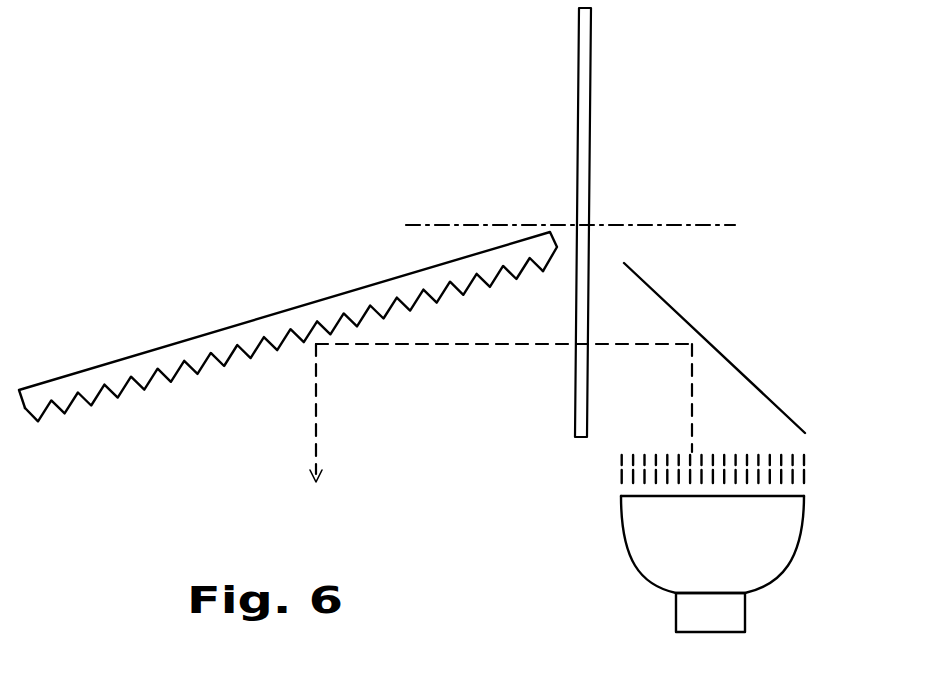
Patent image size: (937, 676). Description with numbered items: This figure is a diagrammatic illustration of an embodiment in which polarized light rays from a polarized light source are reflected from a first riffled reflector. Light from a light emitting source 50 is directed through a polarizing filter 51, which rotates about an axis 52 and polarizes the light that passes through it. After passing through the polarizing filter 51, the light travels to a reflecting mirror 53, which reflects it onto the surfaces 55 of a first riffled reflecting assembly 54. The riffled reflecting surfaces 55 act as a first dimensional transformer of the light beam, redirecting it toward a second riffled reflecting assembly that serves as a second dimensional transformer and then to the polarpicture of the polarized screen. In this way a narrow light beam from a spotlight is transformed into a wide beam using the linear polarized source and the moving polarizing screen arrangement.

The light emitting source 50 is at (626, 552).
The polarizing filter 51 is at (572, 89).
The axis 52 is at (627, 221).
The reflecting mirror 53 is at (718, 342).
The first riffled reflecting assembly 54 is at (182, 333).
The surfaces 55 is at (103, 400).